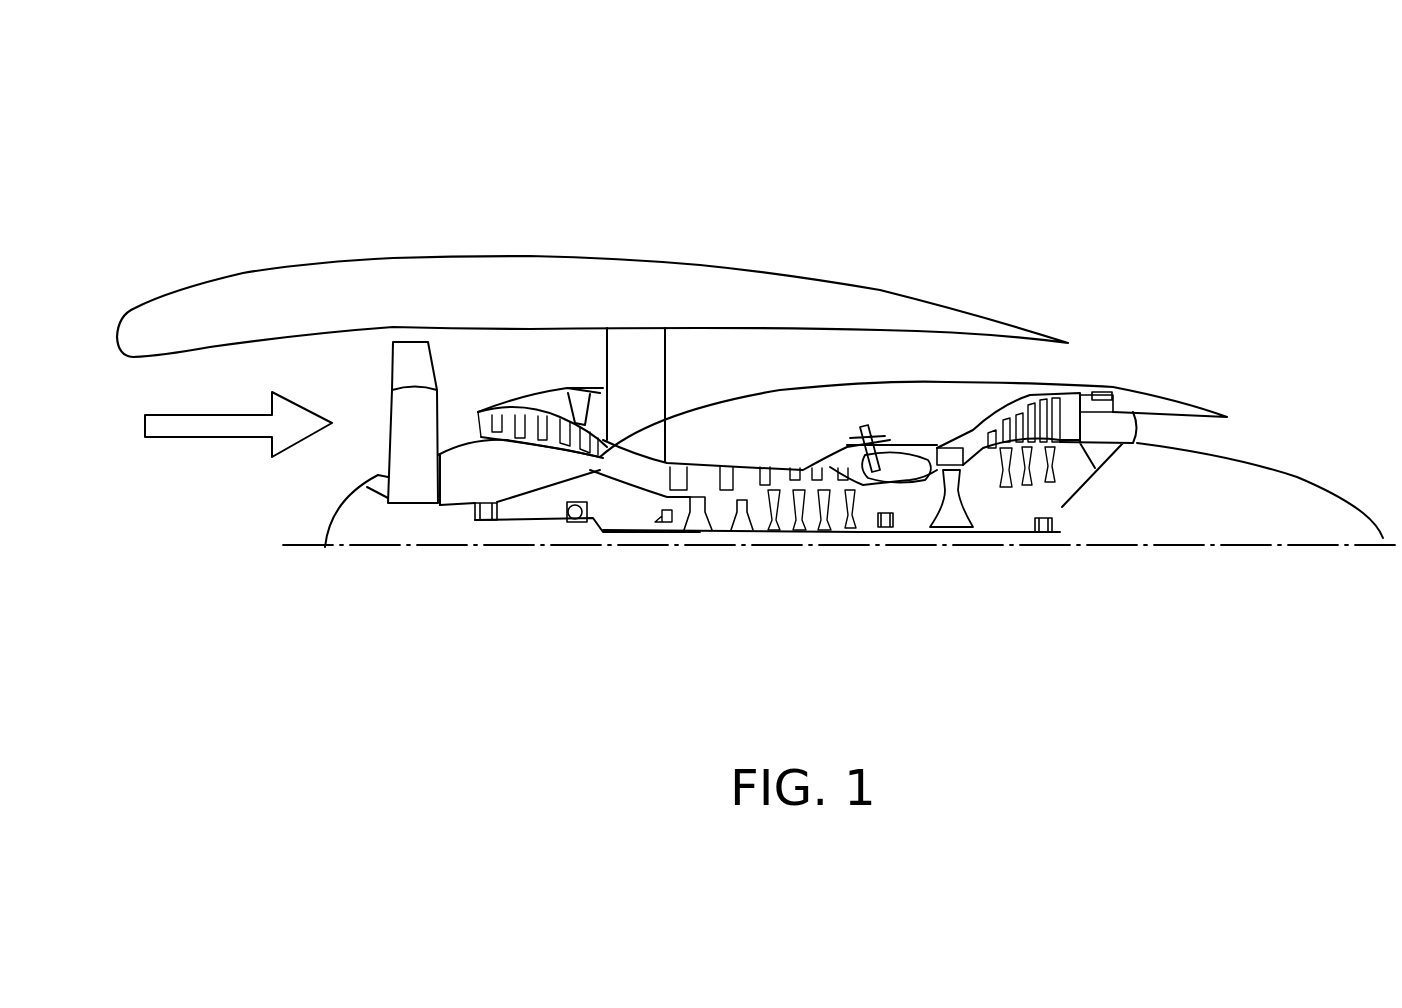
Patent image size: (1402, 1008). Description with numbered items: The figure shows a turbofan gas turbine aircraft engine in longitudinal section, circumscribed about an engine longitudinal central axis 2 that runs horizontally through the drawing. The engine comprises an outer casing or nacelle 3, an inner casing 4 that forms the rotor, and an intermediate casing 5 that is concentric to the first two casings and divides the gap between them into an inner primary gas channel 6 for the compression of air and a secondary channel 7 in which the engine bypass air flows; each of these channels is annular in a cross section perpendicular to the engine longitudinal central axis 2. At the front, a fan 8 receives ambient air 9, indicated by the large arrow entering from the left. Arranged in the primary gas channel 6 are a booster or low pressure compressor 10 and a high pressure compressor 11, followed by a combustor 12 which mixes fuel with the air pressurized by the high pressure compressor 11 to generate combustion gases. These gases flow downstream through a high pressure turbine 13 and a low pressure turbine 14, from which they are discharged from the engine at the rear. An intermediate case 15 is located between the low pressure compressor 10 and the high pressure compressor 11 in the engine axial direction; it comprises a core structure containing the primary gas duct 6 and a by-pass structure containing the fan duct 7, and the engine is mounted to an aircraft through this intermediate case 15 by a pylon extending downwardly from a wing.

The engine longitudinal central axis 2 is at (1248, 543).
The nacelle 3 is at (225, 295).
The inner casing 4 is at (610, 513).
The intermediate casing 5 is at (816, 405).
The primary gas channel 6 is at (472, 427).
The secondary channel 7 is at (553, 373).
The fan 8 is at (408, 350).
The ambient air 9 is at (192, 430).
The low pressure compressor 10 is at (497, 455).
The high pressure compressor 11 is at (780, 555).
The combustor 12 is at (912, 468).
The high pressure turbine 13 is at (967, 557).
The low pressure turbine 14 is at (1050, 490).
The intermediate case 15 is at (647, 315).